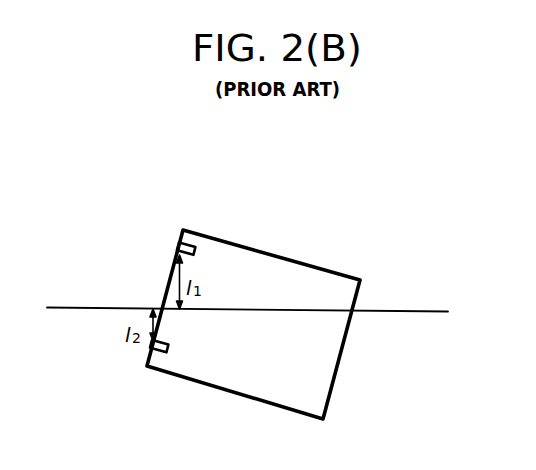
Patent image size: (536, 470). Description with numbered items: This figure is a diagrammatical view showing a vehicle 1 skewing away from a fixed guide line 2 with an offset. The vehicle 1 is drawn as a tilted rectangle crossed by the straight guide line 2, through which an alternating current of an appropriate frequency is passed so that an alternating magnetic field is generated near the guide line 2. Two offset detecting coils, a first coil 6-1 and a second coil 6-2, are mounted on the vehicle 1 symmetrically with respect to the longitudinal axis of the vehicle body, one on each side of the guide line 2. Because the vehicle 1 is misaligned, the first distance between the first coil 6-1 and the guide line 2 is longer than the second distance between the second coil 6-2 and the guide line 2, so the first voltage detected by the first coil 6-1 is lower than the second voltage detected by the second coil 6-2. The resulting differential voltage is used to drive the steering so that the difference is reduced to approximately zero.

The vehicle 1 is at (322, 267).
The guide line 2 is at (401, 313).
The first coil 6-1 is at (181, 246).
The second coil 6-2 is at (149, 351).